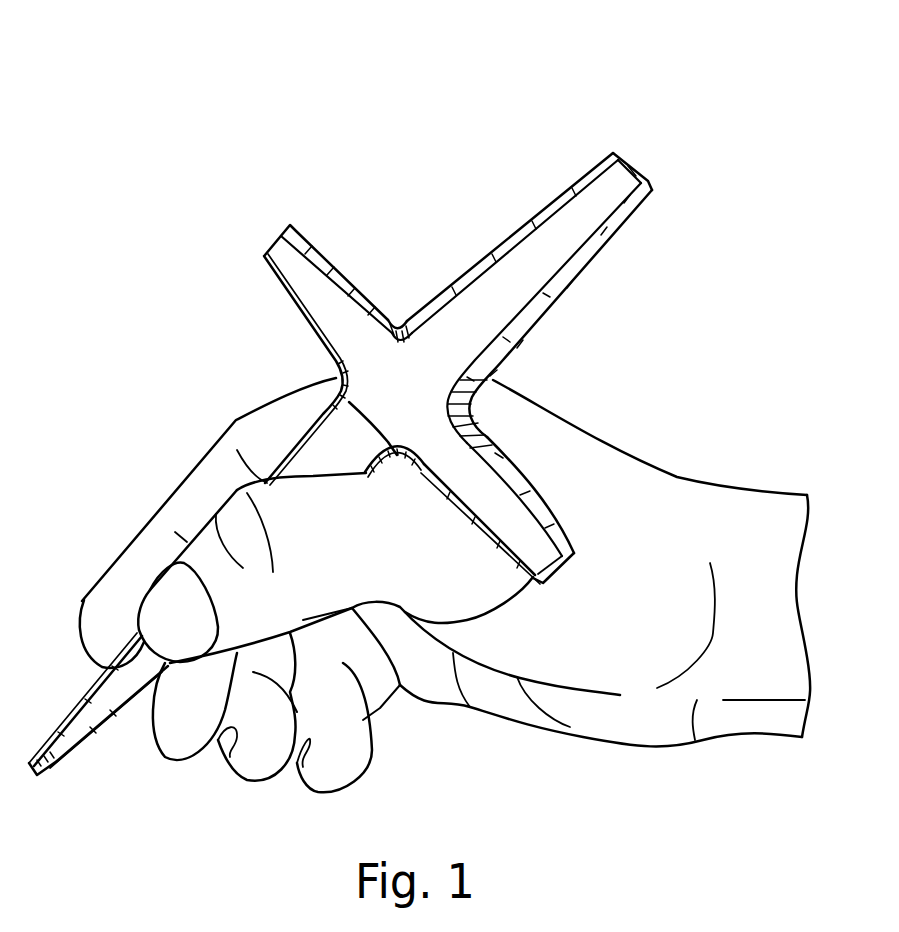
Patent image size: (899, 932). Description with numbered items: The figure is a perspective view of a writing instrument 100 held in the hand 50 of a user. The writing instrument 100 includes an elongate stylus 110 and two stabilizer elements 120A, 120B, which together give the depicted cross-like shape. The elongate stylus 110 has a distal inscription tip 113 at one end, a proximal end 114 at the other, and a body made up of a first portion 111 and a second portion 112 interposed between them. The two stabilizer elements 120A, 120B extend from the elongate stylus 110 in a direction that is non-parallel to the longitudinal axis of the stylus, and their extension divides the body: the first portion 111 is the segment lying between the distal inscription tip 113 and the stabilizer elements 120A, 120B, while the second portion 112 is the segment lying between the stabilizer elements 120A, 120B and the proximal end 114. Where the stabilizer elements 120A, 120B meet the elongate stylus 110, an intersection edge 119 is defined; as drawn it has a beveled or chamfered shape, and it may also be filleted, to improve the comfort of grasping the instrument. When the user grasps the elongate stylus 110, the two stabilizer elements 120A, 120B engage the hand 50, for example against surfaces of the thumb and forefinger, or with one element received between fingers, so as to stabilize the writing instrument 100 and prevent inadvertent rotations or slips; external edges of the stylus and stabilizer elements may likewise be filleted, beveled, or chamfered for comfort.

The writing instrument 100 is at (277, 93).
The elongate stylus 110 is at (420, 307).
The first portion 111 is at (80, 608).
The second portion 112 is at (507, 280).
The distal inscription tip 113 is at (53, 766).
The proximal end 114 is at (638, 172).
The intersection edge 119 is at (336, 370).
The stabilizer element 120A is at (310, 283).
The stabilizer element 120B is at (470, 475).
The hand 50 is at (728, 470).